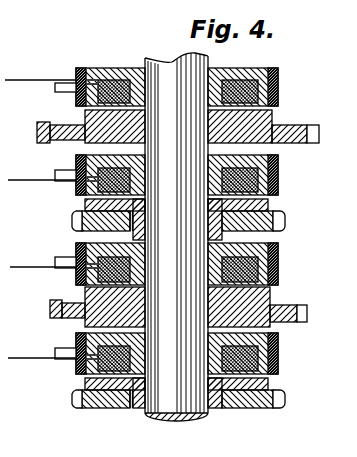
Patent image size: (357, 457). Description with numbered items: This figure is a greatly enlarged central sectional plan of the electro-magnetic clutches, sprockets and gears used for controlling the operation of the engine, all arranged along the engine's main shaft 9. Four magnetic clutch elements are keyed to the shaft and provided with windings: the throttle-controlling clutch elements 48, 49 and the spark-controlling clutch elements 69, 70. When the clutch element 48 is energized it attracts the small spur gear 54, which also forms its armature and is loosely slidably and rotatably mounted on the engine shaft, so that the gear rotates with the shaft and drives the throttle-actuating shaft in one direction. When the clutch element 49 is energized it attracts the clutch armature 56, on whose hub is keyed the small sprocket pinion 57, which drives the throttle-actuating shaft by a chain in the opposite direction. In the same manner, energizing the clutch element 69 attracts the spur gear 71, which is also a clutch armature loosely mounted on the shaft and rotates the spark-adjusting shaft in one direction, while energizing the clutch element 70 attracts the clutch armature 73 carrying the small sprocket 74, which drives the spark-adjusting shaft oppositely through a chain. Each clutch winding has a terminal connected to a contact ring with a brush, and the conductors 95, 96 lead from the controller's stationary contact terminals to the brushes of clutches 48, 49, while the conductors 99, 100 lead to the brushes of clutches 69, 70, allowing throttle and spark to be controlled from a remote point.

The main shaft 9 is at (165, 393).
The magnetic clutch element 48 is at (258, 68).
The magnetic clutch element 49 is at (258, 156).
The spur gear 54 is at (287, 125).
The clutch armature 56 is at (270, 207).
The sprocket pinion 57 is at (281, 222).
The magnetic clutch element 69 is at (263, 241).
The magnetic clutch element 70 is at (263, 335).
The spur gear 71 is at (293, 305).
The clutch armature 73 is at (272, 387).
The sprocket 74 is at (285, 404).
The conductor 95 is at (35, 79).
The conductor 96 is at (40, 179).
The conductor 99 is at (46, 267).
The conductor 100 is at (46, 358).